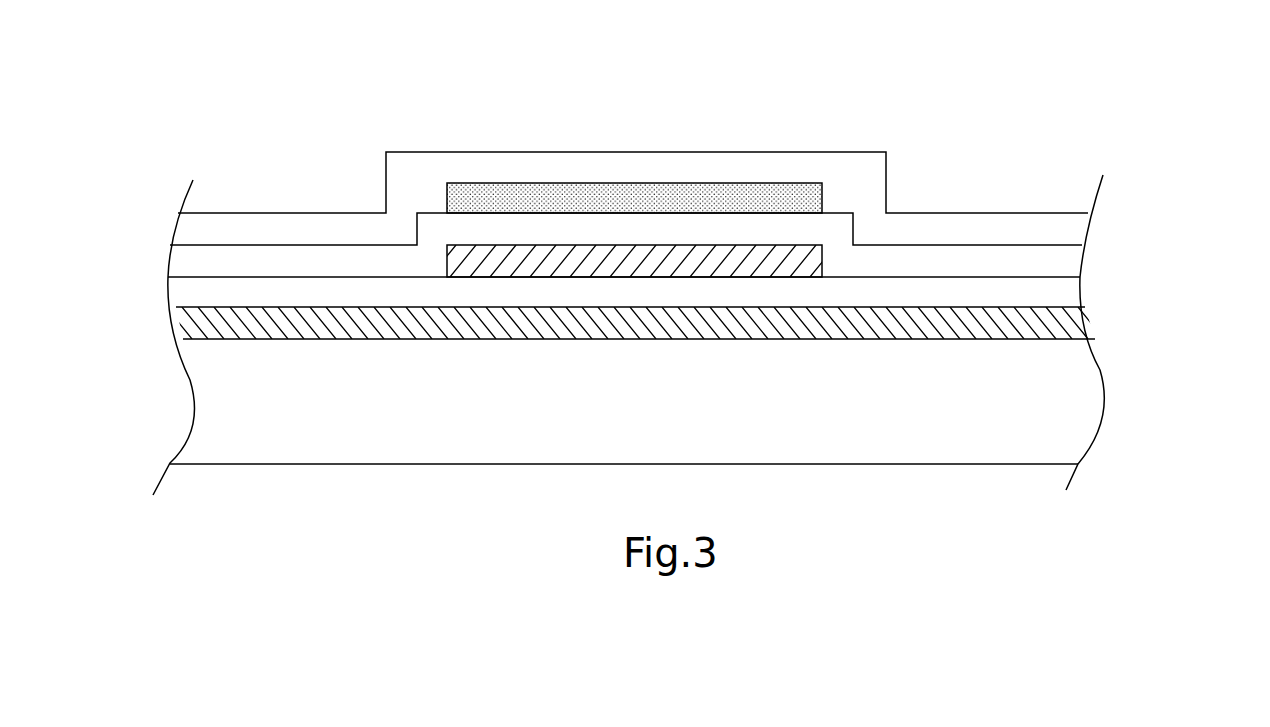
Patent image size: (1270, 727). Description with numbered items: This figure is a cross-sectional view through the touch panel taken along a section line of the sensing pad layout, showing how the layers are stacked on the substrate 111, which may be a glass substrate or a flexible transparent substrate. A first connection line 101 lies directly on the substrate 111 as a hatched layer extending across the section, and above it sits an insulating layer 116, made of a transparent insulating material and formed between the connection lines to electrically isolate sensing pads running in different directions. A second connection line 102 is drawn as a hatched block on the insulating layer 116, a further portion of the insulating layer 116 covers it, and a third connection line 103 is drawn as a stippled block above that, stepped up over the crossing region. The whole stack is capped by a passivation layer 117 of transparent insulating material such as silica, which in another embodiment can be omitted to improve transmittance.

The first connection lines 101 is at (1092, 322).
The second connection lines 102 is at (808, 243).
The third connection lines 103 is at (780, 197).
The substrate 111 is at (1072, 402).
The insulating layer 116 is at (1066, 263).
The passivation layer 117 is at (1070, 238).